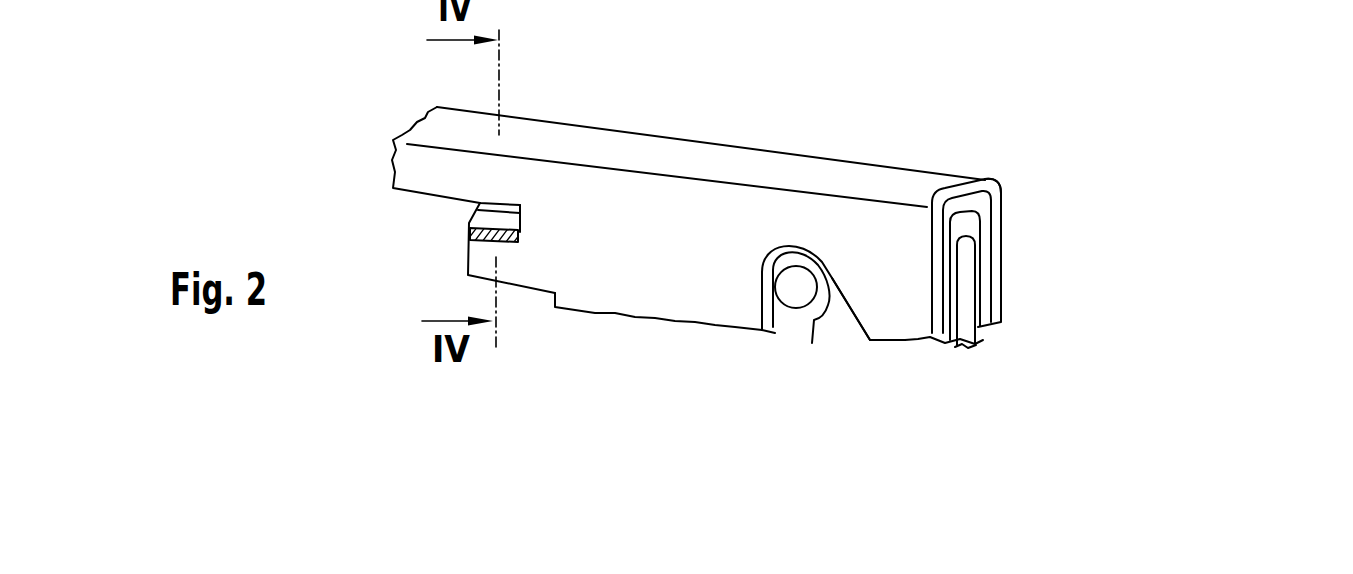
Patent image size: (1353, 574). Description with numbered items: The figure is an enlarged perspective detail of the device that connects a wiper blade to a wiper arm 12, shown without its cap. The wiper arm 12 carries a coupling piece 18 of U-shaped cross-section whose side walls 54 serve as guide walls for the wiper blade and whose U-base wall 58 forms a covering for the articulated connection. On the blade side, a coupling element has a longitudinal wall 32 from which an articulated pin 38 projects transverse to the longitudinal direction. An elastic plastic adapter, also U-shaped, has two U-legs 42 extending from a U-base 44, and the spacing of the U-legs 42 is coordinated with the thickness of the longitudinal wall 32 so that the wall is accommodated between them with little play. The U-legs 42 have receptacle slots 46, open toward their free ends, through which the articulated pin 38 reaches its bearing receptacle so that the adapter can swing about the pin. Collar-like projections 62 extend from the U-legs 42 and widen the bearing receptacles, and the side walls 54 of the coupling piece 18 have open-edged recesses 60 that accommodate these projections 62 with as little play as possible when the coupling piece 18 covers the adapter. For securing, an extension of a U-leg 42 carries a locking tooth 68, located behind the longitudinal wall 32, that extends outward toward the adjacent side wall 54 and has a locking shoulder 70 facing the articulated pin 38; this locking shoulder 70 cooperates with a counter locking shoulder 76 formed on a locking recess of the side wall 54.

The wiper arm 12 is at (393, 140).
The coupling piece 18 is at (768, 140).
The longitudinal wall 32 is at (968, 333).
The articulated pin 38 is at (793, 292).
The U-leg 42 is at (982, 278).
The U-base 44 is at (1001, 192).
The receptacle slot 46 is at (797, 352).
The side wall 54 is at (995, 307).
The U-base wall 58 is at (966, 190).
The recess 60 is at (752, 330).
The collar-like projection 62 is at (838, 328).
The locking tooth 68 is at (447, 232).
The locking shoulder 70 is at (519, 231).
The counter locking shoulder 76 is at (478, 210).